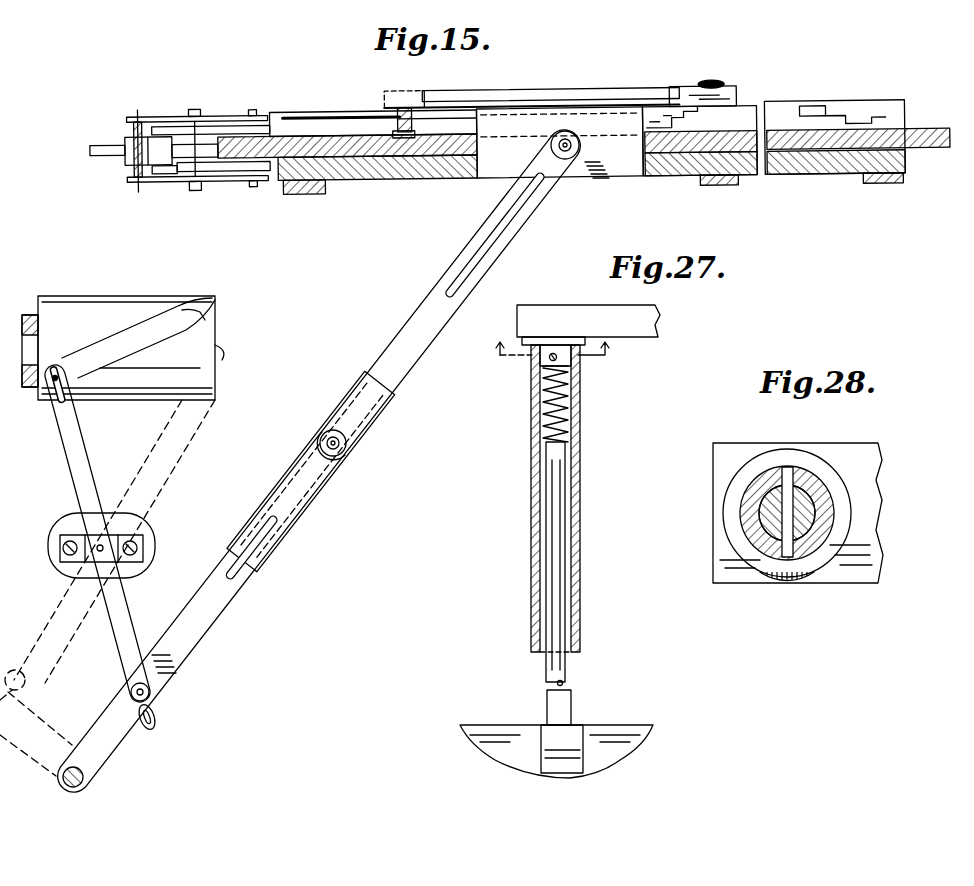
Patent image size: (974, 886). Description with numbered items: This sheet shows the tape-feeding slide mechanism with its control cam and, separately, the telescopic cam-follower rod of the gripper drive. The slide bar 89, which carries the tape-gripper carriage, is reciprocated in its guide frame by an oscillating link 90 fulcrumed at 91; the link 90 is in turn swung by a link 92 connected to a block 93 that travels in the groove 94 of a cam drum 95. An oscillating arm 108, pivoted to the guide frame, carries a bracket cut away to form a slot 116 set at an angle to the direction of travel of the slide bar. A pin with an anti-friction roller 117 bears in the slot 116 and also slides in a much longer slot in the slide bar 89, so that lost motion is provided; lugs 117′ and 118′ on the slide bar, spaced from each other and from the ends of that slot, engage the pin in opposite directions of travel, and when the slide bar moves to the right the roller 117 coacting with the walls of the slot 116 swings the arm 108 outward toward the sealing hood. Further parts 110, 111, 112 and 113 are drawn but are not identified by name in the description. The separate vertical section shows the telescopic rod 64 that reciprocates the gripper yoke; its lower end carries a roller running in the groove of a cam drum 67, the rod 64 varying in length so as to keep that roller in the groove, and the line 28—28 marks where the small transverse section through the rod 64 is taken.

In FIG. 15, the slide bar 89 is at (361, 160).
In FIG. 15, the oscillating link 90 is at (409, 320).
In FIG. 15, the fulcrum 91 is at (78, 783).
In FIG. 15, the link 92 is at (82, 445).
In FIG. 15, the block 93 is at (50, 398).
In FIG. 15, the groove 94 is at (120, 350).
In FIG. 15, the cam drum 95 is at (195, 300).
In FIG. 15, the oscillating arm 108 is at (568, 90).
In FIG. 15, the sleeve 110 is at (224, 128).
In FIG. 15, the end plate 111 is at (227, 180).
In FIG. 15, the collar 112 is at (160, 172).
In FIG. 15, the coupling block 113 is at (128, 160).
In FIG. 15, the slot 116 is at (655, 118).
In FIG. 15, the pin with anti-friction roller 117 is at (398, 92).
In FIG. 15, the lug 117′ is at (706, 98).
In FIG. 15, the lug 118′ is at (810, 110).
In FIG. 27, the telescopic rod 64 is at (531, 440).
In FIG. 28, the telescopic rod 64 is at (740, 522).
In FIG. 27, the section line 28 is at (553, 343).
In FIG. 27, the cam drum 67 is at (508, 726).